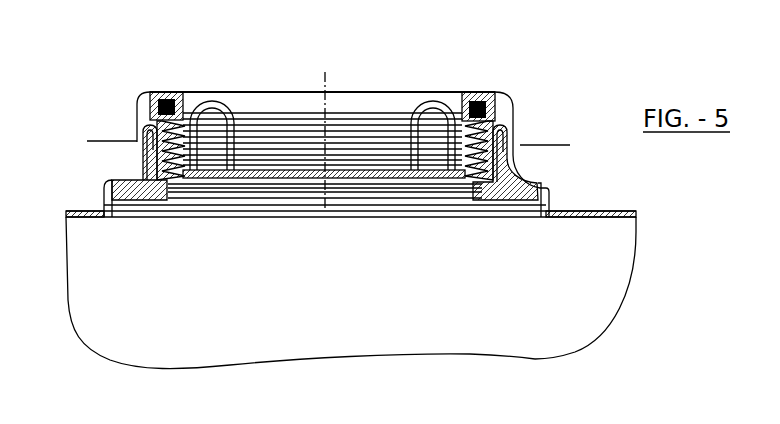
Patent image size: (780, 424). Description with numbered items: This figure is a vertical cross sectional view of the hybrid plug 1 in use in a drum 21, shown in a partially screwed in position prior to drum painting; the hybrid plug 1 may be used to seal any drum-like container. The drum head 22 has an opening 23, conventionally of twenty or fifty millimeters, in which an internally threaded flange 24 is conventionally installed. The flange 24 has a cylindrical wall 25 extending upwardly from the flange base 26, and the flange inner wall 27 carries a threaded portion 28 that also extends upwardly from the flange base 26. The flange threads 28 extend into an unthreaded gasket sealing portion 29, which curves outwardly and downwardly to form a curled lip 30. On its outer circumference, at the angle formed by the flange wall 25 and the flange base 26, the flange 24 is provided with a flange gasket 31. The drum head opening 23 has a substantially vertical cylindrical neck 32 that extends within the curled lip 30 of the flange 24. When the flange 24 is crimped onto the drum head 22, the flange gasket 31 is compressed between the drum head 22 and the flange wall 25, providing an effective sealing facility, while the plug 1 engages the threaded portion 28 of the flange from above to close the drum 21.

The hybrid plug 1 is at (338, 86).
The drum 21 is at (628, 296).
The drum head 22 is at (634, 210).
The opening 23 is at (552, 181).
The internally threaded flange 24 is at (535, 198).
The cylindrical wall 25 is at (140, 174).
The flange base 26 is at (113, 208).
The flange inner wall 27 is at (488, 188).
The threaded portion 28 is at (147, 161).
The unthreaded gasket sealing portion 29 is at (490, 128).
The curled lip 30 is at (507, 130).
The flange gasket 31 is at (150, 185).
The cylindrical neck 32 is at (503, 153).